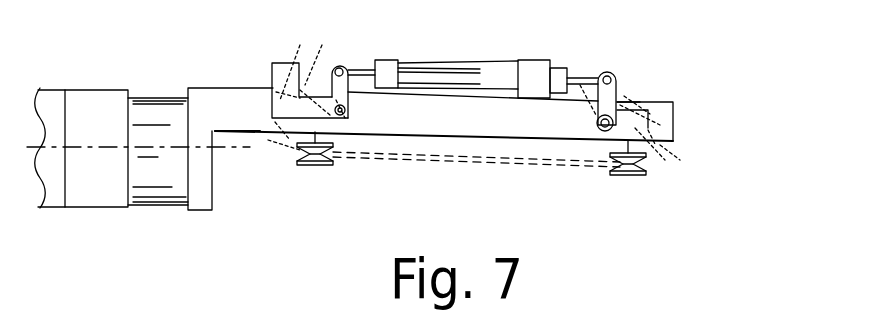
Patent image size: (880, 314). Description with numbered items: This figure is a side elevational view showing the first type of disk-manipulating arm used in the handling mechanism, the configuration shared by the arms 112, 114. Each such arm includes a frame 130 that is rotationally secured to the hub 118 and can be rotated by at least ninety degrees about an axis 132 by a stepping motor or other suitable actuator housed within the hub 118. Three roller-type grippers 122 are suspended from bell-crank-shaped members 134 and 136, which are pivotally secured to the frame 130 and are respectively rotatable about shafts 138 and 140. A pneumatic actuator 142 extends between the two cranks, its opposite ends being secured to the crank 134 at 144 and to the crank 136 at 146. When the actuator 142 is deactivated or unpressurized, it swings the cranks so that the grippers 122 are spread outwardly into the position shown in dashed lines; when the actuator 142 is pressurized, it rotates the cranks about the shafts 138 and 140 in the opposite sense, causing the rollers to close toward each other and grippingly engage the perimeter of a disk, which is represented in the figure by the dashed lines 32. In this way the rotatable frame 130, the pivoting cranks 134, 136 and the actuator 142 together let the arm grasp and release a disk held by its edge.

The disk 32 is at (497, 163).
The arm 112 is at (673, 126).
The arm 114 is at (444, 136).
The hub 118 is at (57, 199).
The roller-type gripper 122 is at (630, 176).
The frame 130 is at (240, 97).
The axis 132 is at (232, 149).
The bell-crank-shaped member 134 is at (300, 45).
The bell-crank-shaped member 136 is at (627, 100).
The shaft 138 is at (350, 117).
The shaft 140 is at (597, 132).
The pneumatic actuator 142 is at (462, 63).
The actuator attachment point 144 is at (342, 67).
The actuator attachment point 146 is at (607, 75).